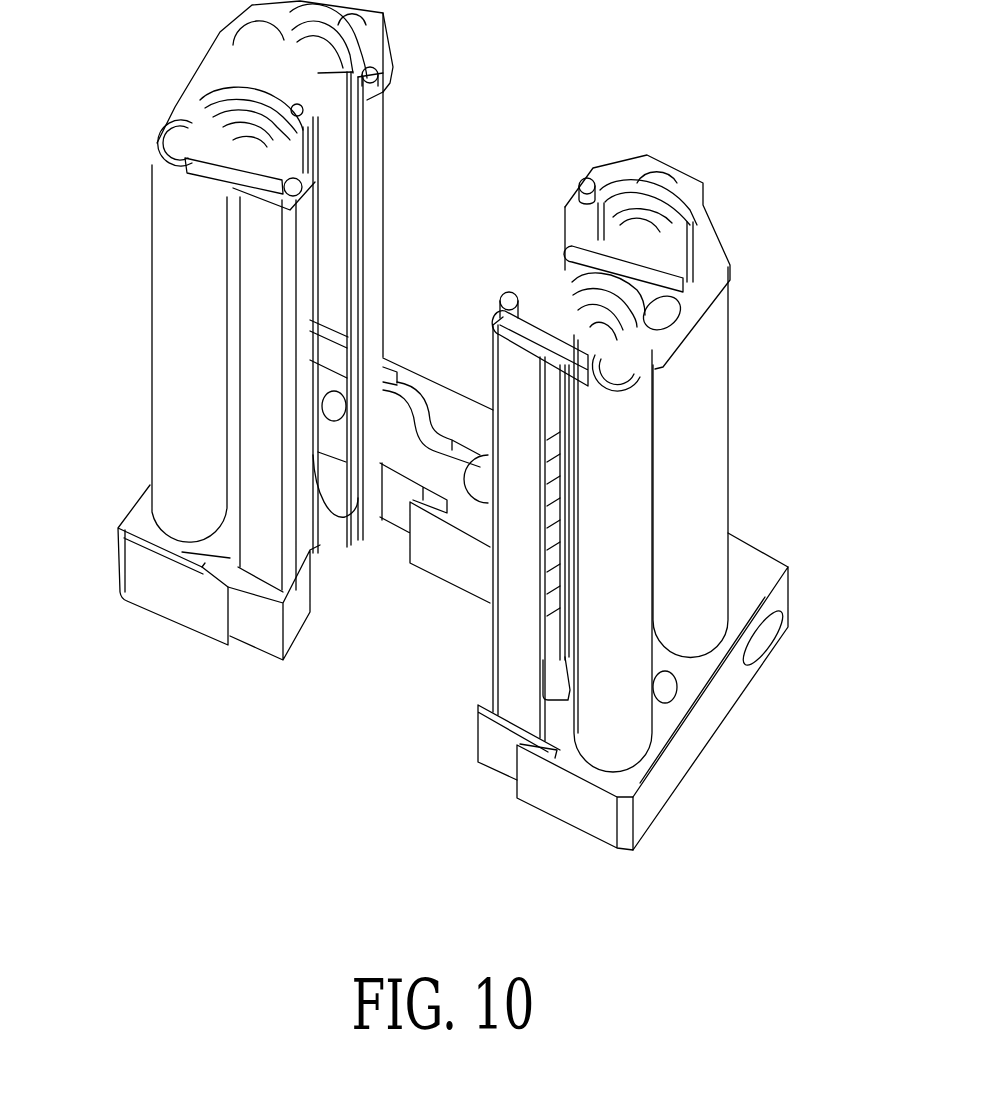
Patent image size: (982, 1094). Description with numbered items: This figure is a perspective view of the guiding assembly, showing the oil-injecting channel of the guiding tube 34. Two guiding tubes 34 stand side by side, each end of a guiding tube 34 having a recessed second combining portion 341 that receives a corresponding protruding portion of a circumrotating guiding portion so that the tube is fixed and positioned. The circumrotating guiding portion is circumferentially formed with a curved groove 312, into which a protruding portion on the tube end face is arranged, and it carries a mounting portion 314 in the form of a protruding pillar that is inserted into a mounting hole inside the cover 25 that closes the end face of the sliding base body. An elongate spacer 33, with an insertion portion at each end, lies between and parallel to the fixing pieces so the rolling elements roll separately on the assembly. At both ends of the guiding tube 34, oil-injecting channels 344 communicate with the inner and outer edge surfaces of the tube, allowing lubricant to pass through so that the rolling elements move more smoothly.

The cover 25 is at (715, 705).
The spacer 33 is at (313, 158).
The guiding tube 34 is at (708, 440).
The curved groove 312 is at (640, 232).
The mounting portion 314 is at (585, 178).
The second combining portion 341 is at (157, 148).
The oil-injecting channel 344 is at (703, 217).